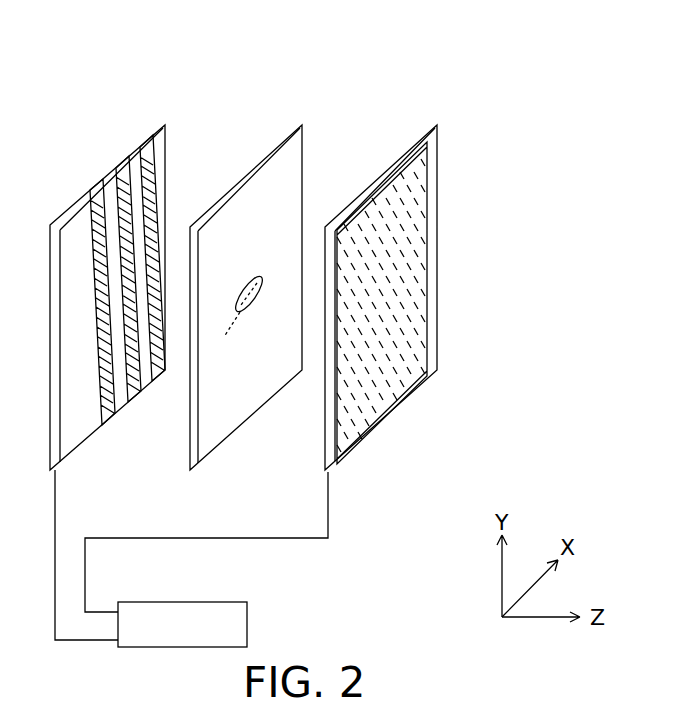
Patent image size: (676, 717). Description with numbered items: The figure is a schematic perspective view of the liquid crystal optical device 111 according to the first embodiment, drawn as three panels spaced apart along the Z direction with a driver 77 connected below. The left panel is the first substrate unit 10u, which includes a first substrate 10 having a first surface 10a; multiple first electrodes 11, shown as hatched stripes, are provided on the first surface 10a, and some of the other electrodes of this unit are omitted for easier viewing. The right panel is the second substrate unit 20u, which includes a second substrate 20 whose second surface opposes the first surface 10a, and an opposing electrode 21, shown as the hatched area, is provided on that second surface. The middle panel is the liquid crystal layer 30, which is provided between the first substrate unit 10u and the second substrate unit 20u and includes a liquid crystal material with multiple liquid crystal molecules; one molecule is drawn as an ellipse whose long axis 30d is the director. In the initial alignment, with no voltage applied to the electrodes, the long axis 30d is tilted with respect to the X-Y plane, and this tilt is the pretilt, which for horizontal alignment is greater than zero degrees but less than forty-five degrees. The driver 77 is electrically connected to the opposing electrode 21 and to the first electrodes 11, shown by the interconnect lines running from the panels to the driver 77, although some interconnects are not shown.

The liquid crystal optical device 111 is at (533, 103).
The first substrate unit 10u is at (210, 59).
The first substrate 10 is at (134, 150).
The first electrodes 11 is at (130, 197).
The first surface 10a is at (77, 418).
The liquid crystal layer 30 is at (273, 149).
The long axis 30d is at (260, 280).
The second substrate unit 20u is at (480, 59).
The second substrate 20 is at (434, 165).
The opposing electrode 21 is at (407, 148).
The driver 77 is at (218, 626).